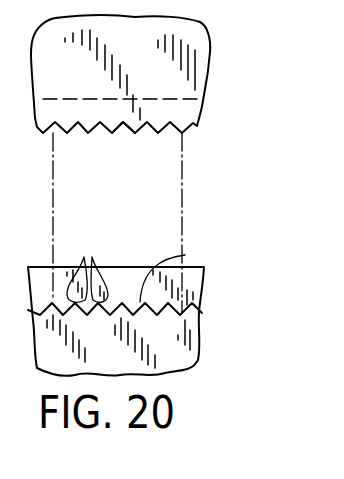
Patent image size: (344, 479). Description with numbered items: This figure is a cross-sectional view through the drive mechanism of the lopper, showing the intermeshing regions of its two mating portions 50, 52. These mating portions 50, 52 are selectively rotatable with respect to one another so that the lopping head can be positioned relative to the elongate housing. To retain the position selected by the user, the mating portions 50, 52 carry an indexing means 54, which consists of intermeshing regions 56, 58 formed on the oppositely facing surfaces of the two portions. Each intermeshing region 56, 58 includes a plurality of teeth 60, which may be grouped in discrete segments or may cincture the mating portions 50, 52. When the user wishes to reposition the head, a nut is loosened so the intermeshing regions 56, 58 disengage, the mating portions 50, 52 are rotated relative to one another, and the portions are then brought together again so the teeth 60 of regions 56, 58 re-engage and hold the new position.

The mating portion 50 is at (197, 50).
The mating portion 52 is at (167, 347).
The indexing means 54 is at (208, 145).
The intermeshing region 56 is at (130, 146).
The intermeshing region 58 is at (185, 255).
The teeth 60 is at (98, 137).